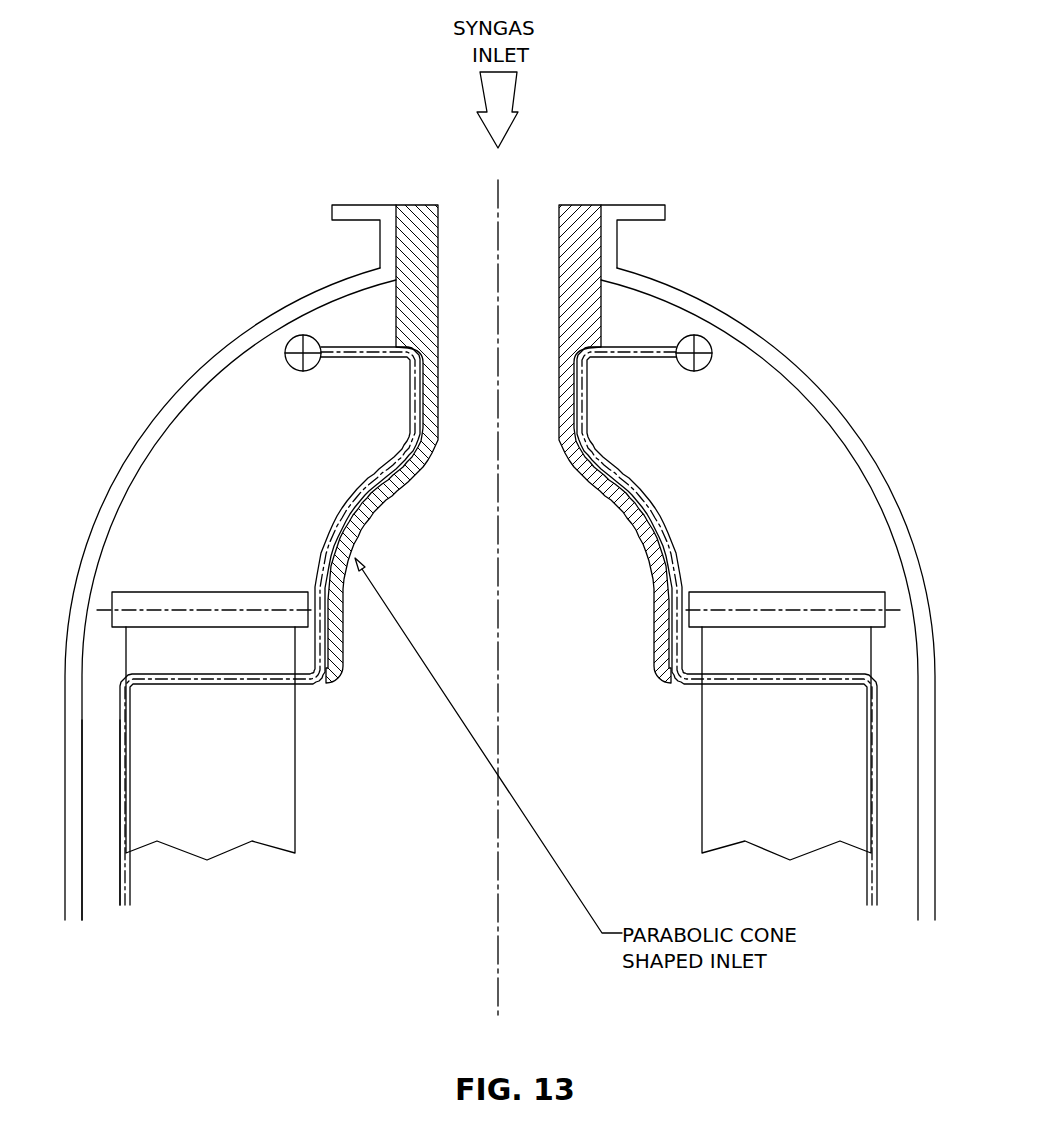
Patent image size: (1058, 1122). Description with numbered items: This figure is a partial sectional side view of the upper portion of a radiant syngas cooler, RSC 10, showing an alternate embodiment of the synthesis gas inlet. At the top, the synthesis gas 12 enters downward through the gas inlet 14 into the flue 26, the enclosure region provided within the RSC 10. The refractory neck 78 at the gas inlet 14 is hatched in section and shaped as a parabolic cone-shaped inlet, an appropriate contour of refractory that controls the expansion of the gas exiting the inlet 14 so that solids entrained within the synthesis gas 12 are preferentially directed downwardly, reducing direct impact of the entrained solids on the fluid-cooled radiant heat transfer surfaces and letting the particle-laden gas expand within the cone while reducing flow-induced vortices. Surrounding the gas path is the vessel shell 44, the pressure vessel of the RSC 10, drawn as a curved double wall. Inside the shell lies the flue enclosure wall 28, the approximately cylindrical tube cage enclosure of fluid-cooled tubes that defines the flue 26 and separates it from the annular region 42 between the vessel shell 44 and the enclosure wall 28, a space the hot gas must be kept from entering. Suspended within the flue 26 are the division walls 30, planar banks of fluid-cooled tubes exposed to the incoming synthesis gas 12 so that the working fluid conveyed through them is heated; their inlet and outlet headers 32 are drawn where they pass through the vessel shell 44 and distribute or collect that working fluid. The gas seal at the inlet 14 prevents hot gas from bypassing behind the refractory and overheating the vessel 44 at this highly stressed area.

The radiant syngas cooler 10 is at (529, 547).
The synthesis gas 12 is at (497, 110).
The gas inlet 14 is at (620, 203).
The flue 26 is at (571, 743).
The enclosure wall 28 is at (118, 895).
The division wall 30 is at (220, 855).
The headers 32 is at (288, 338).
The annular region 42 is at (92, 883).
The vessel shell 44 is at (768, 340).
The refractory neck 78 is at (573, 218).